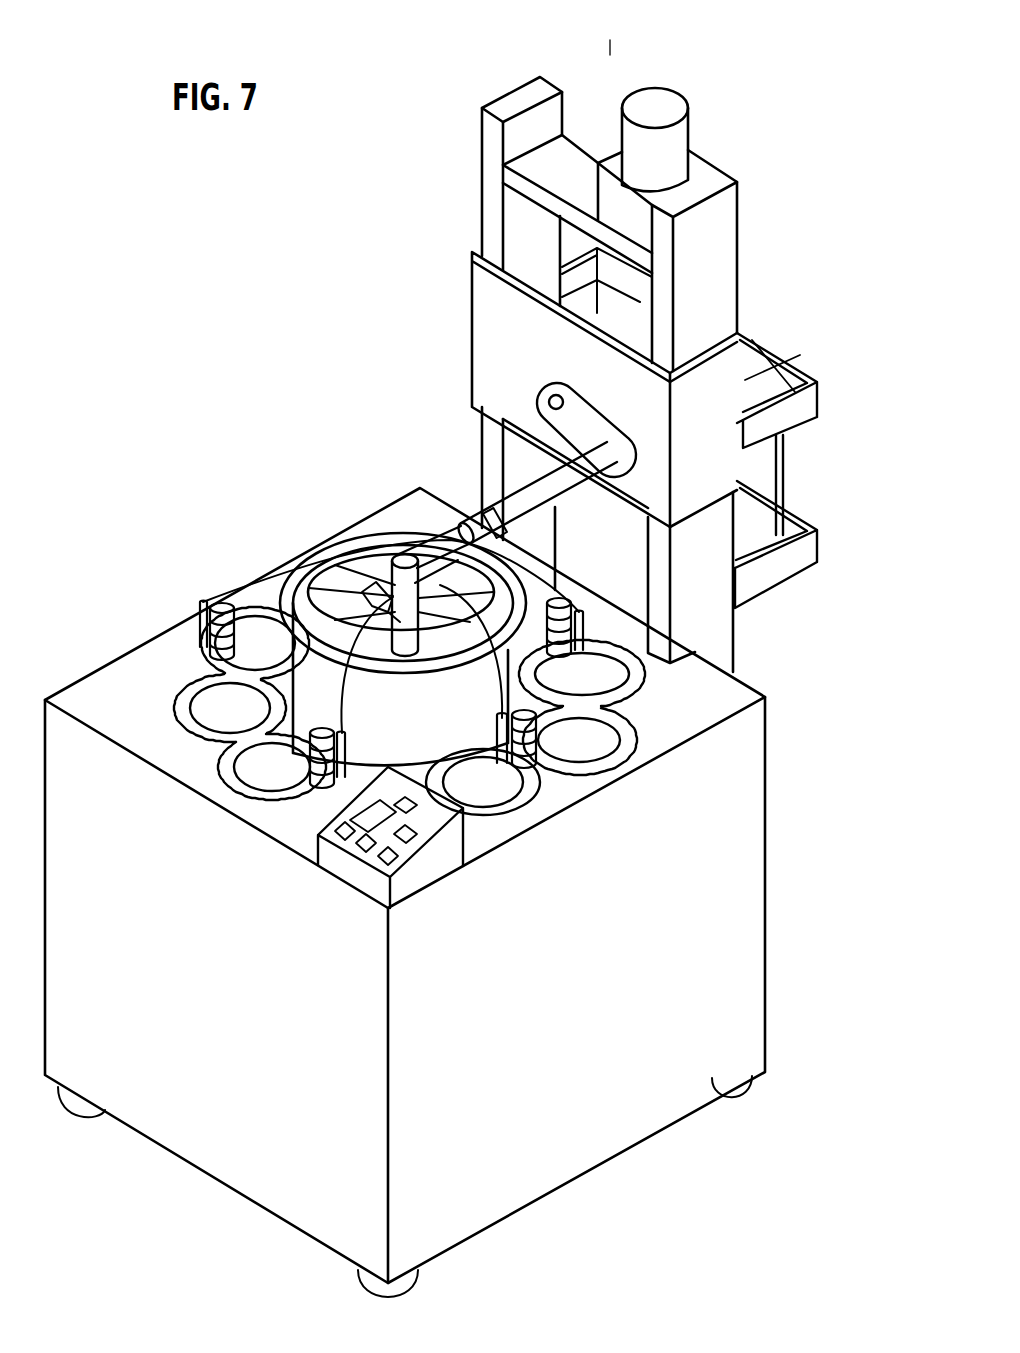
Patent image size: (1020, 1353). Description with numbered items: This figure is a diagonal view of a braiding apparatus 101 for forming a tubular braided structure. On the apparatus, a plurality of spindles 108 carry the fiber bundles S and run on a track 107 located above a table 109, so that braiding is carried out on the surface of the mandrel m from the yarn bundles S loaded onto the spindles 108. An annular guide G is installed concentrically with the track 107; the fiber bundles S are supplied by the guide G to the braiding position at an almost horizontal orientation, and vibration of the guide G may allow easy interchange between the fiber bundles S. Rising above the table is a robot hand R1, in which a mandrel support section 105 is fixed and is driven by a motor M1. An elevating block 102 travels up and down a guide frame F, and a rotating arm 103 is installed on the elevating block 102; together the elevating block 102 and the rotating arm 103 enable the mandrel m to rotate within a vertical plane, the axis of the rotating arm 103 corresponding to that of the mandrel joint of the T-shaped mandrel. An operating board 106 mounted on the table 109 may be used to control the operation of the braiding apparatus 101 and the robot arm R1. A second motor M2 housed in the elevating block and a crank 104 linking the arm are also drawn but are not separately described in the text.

The braiding apparatus 101 is at (205, 302).
The elevating block 102 is at (727, 387).
The rotating arm 103 is at (520, 512).
The crank 104 is at (547, 403).
The mandrel support section 105 is at (414, 554).
The operating board 106 is at (430, 828).
The track 107 is at (183, 703).
The spindles 108 is at (210, 635).
The table 109 is at (533, 1187).
The robot hand R1 is at (610, 50).
The guide frame F is at (503, 100).
The motor M1 is at (667, 98).
The second motor M2 is at (643, 327).
The annular guide G is at (325, 555).
The fiber bundles S is at (235, 583).
The mandrel m is at (377, 582).